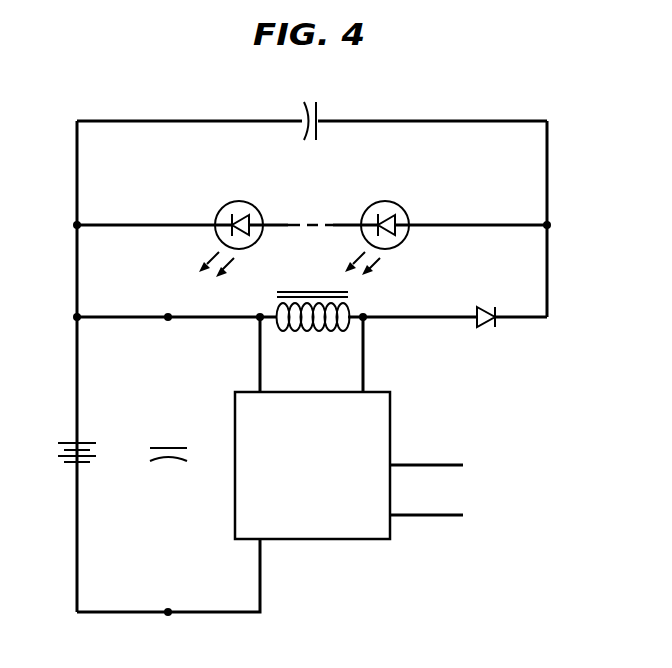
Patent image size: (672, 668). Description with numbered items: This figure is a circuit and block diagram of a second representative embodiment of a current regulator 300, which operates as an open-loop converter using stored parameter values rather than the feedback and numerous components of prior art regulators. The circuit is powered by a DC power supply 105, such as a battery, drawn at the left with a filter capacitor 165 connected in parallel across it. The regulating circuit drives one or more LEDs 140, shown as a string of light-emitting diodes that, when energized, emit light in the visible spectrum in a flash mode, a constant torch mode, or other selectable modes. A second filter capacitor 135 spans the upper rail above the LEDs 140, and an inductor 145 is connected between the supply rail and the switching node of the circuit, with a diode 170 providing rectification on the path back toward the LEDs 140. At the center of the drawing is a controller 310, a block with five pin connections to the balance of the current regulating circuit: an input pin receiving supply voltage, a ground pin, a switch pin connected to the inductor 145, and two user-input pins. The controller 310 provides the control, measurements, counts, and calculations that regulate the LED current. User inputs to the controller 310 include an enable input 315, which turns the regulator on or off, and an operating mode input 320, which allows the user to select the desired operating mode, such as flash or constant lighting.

The DC power supply 105 is at (68, 440).
The filter capacitor 135 is at (321, 103).
The LEDs 140 is at (410, 196).
The inductor 145 is at (348, 307).
The filter capacitor 165 is at (158, 446).
The diode 170 is at (487, 306).
The current regulator 300 is at (460, 630).
The controller 310 is at (310, 541).
The enable input 315 is at (442, 463).
The operating mode input 320 is at (440, 517).